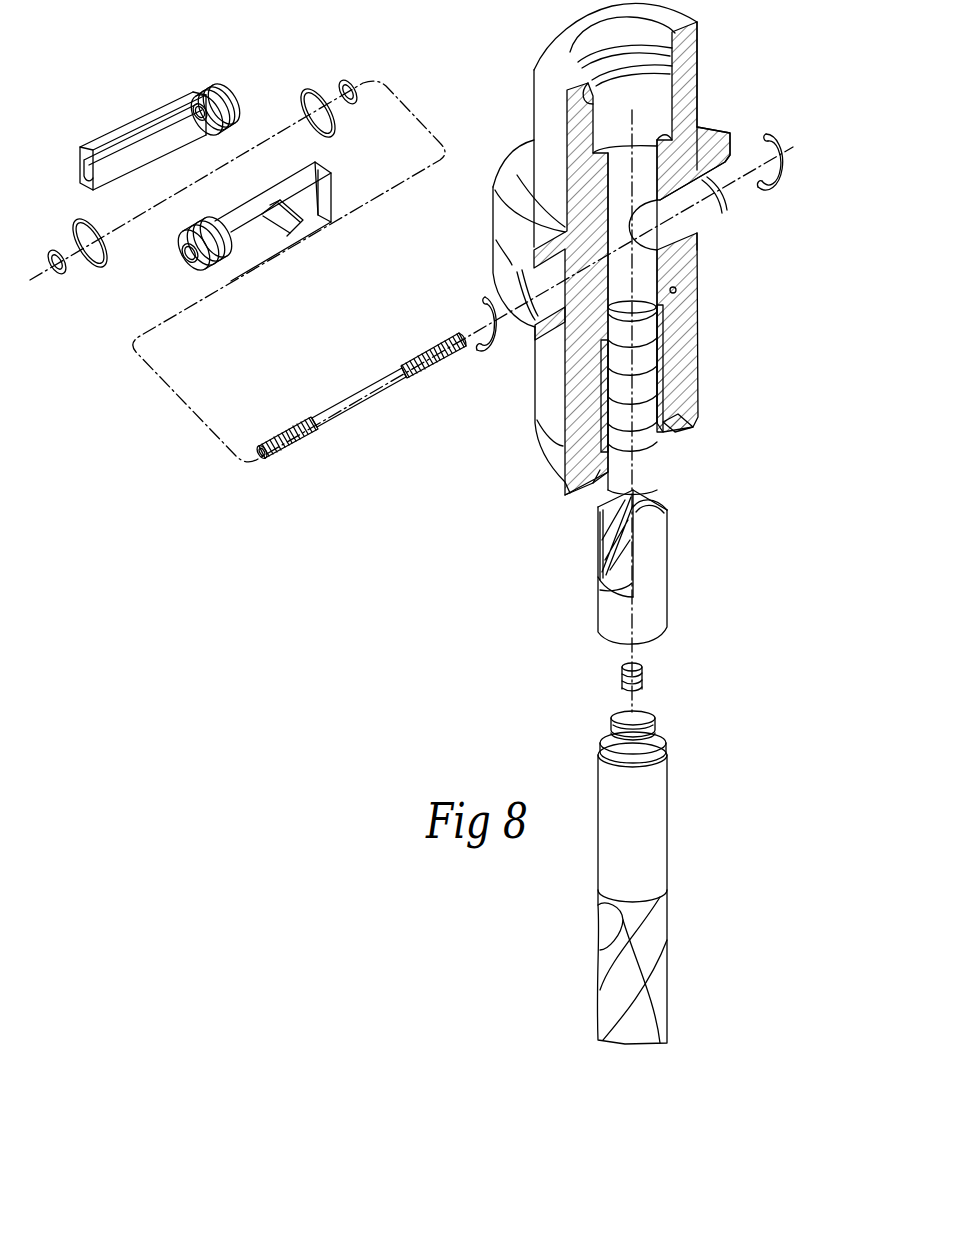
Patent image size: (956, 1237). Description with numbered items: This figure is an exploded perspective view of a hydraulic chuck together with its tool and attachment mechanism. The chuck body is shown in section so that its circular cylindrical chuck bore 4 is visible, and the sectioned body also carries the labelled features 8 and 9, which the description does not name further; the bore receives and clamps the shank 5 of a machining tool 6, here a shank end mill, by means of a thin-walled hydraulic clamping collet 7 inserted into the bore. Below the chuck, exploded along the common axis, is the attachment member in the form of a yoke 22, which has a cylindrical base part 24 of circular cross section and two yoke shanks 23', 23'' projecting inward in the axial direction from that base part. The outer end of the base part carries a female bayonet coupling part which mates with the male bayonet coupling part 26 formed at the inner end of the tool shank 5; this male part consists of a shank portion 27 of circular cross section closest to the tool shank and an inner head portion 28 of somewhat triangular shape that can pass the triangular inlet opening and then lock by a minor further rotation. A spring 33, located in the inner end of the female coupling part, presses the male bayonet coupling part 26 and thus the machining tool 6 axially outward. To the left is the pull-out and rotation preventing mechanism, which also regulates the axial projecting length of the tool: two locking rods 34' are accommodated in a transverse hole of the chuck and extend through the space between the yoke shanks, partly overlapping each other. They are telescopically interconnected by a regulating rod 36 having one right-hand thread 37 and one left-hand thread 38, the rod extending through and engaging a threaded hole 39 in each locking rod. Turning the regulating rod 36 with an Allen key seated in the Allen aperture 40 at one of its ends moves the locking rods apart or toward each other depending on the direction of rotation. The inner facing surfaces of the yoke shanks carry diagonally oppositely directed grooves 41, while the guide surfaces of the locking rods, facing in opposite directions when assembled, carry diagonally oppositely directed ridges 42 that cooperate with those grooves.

The chuck bore 4 is at (643, 437).
The shank 5 is at (622, 855).
The machining tool 6 is at (576, 938).
The clamping collet 7 is at (663, 365).
The chamfer / bore bottom 8 is at (665, 420).
The tool holder body 9 is at (680, 292).
The yoke 22 is at (643, 567).
The yoke shank 23' is at (686, 517).
The yoke shank 23'' is at (565, 543).
The cylindrical base part 24 is at (607, 617).
The male bayonet coupling part 26 is at (631, 722).
The shank portion 27 is at (645, 750).
The inner head portion 28 is at (645, 720).
The spring 33 is at (643, 662).
The locking rod 34' is at (205, 189).
The regulating rod 36 is at (363, 428).
The right-hand thread 37 is at (297, 440).
The left-hand thread 38 is at (443, 350).
The hole 39 is at (197, 112).
The Allen aperture 40 is at (260, 450).
The grooves 41 is at (603, 540).
The ridges 42 is at (298, 225).